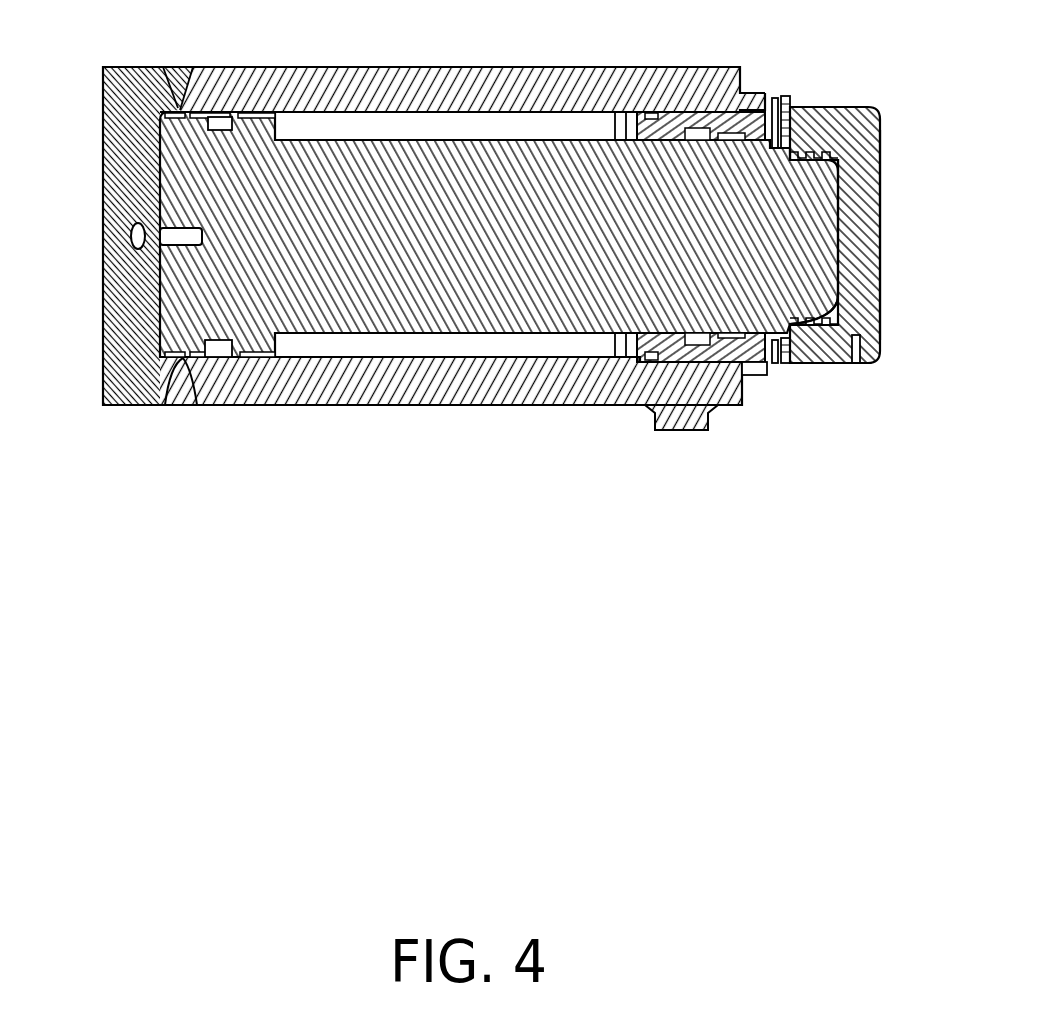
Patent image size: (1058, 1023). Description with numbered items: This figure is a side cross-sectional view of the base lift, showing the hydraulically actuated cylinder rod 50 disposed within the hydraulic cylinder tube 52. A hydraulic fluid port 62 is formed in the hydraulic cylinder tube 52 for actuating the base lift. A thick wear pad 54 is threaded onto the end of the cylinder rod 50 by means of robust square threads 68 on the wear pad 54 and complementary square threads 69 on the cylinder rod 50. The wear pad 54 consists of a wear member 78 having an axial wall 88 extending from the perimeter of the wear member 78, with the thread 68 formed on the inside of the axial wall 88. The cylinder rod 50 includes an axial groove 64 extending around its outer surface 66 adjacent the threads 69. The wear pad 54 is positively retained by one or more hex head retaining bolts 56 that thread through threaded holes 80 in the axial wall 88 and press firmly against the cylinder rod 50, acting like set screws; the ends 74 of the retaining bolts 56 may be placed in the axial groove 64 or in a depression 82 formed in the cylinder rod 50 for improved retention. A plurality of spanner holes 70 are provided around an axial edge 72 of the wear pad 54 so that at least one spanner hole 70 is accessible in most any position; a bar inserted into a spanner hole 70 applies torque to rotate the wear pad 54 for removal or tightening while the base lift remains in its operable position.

The cylinder rod 50 is at (455, 160).
The hydraulic cylinder tube 52 is at (364, 82).
The wear pad 54 is at (878, 123).
The retaining bolt 56 is at (775, 98).
The hydraulic fluid port 62 is at (135, 238).
The axial groove 64 is at (786, 333).
The outer surface 66 is at (776, 362).
The square threads 68 is at (812, 144).
The square threads 69 is at (800, 162).
The spanner hole 70 is at (859, 363).
The axial edge 72 is at (808, 363).
The end of retaining bolt 74 is at (786, 166).
The wear member 78 is at (881, 246).
The threaded hole 80 is at (786, 96).
The depression 82 is at (776, 105).
The axial wall 88 is at (828, 363).